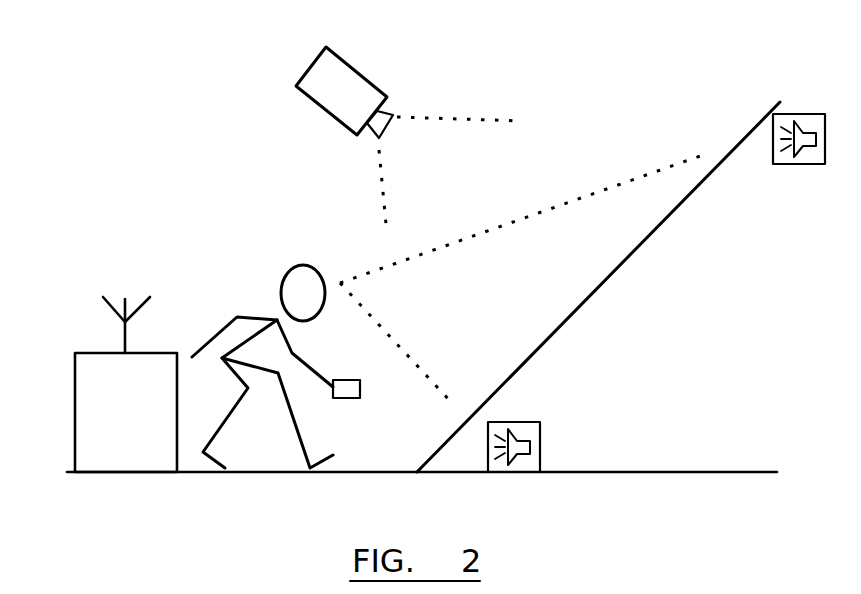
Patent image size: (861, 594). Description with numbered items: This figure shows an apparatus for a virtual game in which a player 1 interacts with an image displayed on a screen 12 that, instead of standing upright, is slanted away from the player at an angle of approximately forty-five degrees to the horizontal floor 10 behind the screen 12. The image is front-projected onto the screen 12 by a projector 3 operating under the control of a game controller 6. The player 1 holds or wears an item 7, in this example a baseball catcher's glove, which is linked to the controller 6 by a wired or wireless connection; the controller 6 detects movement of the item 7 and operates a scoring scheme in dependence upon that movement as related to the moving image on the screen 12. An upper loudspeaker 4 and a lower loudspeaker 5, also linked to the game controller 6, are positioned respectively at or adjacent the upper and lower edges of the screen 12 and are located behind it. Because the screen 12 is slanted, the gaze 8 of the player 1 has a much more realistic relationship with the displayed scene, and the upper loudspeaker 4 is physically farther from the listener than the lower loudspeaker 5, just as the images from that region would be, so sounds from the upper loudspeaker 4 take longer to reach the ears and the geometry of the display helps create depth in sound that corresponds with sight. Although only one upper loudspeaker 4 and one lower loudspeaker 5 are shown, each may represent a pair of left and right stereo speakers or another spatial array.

The player 1 is at (256, 290).
The projector 3 is at (312, 65).
The upper loudspeaker 4 is at (540, 443).
The lower loudspeaker 5 is at (803, 113).
The game controller 6 is at (90, 352).
The item 7 is at (360, 389).
The gaze 8 is at (623, 183).
The floor 10 is at (718, 470).
The screen 12 is at (547, 338).